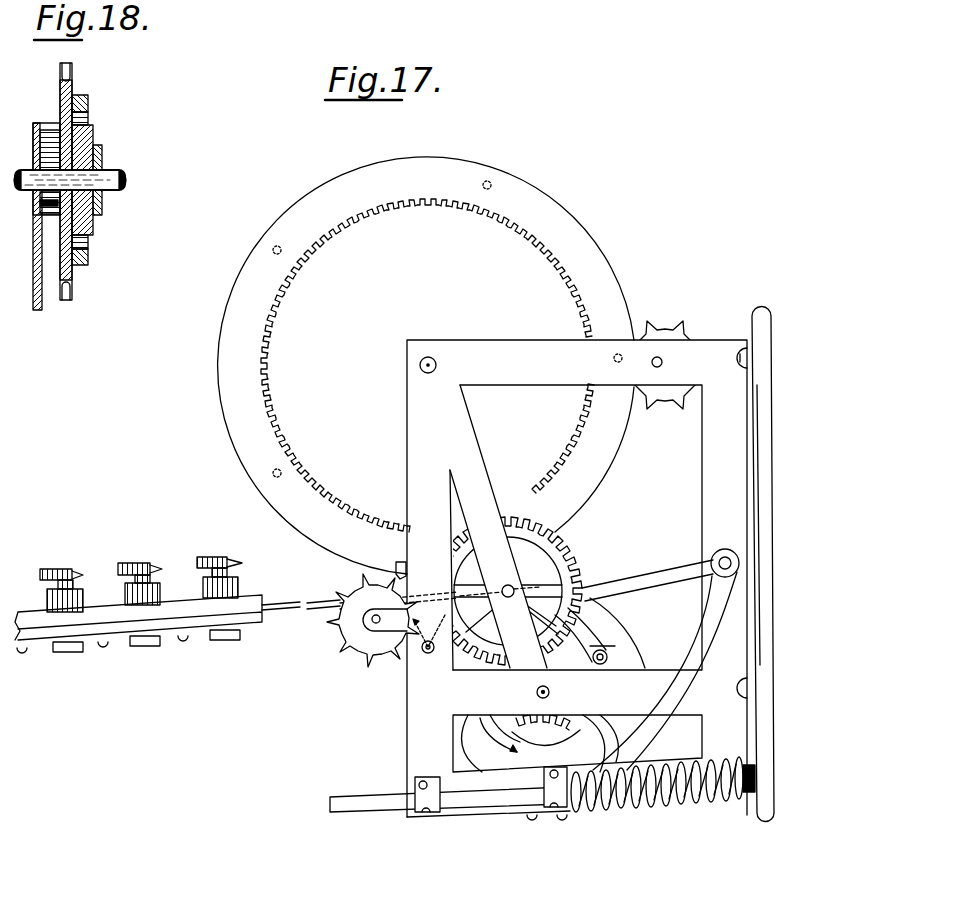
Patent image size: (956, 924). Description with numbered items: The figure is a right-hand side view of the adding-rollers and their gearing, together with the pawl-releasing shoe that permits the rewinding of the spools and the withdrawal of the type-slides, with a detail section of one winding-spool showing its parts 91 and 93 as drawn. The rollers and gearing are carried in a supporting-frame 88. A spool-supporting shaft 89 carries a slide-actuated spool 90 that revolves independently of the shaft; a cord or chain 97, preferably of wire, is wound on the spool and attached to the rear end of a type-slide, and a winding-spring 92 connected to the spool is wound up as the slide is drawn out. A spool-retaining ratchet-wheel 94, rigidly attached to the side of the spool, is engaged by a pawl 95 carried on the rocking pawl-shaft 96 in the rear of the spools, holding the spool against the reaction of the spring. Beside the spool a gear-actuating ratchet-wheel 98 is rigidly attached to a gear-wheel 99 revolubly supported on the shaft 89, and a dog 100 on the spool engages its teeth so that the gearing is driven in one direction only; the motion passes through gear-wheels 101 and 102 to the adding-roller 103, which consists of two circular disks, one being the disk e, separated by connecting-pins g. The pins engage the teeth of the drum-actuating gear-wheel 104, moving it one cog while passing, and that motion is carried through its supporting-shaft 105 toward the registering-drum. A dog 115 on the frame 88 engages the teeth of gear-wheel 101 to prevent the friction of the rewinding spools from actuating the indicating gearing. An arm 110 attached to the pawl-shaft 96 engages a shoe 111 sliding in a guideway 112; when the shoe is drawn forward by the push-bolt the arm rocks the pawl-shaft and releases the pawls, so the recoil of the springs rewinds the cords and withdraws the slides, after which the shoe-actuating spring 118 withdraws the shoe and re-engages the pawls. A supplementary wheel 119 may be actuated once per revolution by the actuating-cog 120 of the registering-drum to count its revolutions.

In FIG. 17, the circular disk e is at (525, 180).
In FIG. 17, the connecting-pins g is at (483, 184).
In FIG. 17, the supporting-frame 88 is at (590, 564).
In FIG. 17, the spool-supporting shaft 89 is at (549, 690).
In FIG. 18, the slide-actuated spool 90 is at (73, 282).
In FIG. 17, the slide-actuated spool 90 is at (620, 632).
In FIG. 18, the pin 91 is at (33, 200).
In FIG. 18, the winding-spring 92 is at (48, 179).
In FIG. 18, the lever 93 is at (33, 305).
In FIG. 18, the spool-retaining ratchet-wheel 94 is at (88, 258).
In FIG. 17, the spool-retaining ratchet-wheel 94 is at (590, 635).
In FIG. 17, the pawl 95 is at (647, 577).
In FIG. 17, the rocking pawl-shaft 96 is at (727, 550).
In FIG. 17, the cord or chain 97 is at (177, 605).
In FIG. 18, the gear-actuating ratchet-wheel 98 is at (93, 228).
In FIG. 17, the gear-actuating ratchet-wheel 98 is at (560, 736).
In FIG. 18, the gear-wheel 99 is at (102, 202).
In FIG. 17, the gear-wheel 99 is at (534, 716).
In FIG. 17, the dog 100 is at (615, 648).
In FIG. 17, the gear-wheel 101 is at (565, 562).
In FIG. 17, the gear-wheel 102 is at (498, 526).
In FIG. 17, the adding-roller 103 is at (427, 365).
In FIG. 17, the drum-actuating gear-wheel 104 is at (658, 330).
In FIG. 17, the supporting-shaft 105 is at (662, 362).
In FIG. 17, the arm 110 is at (665, 671).
In FIG. 17, the shoe 111 is at (568, 810).
In FIG. 17, the guideway 112 is at (415, 800).
In FIG. 17, the dog 115 is at (429, 645).
In FIG. 17, the shoe-actuating spring 118 is at (663, 790).
In FIG. 17, the supplementary wheel 119 is at (373, 620).
In FIG. 17, the actuating-cog 120 is at (399, 562).